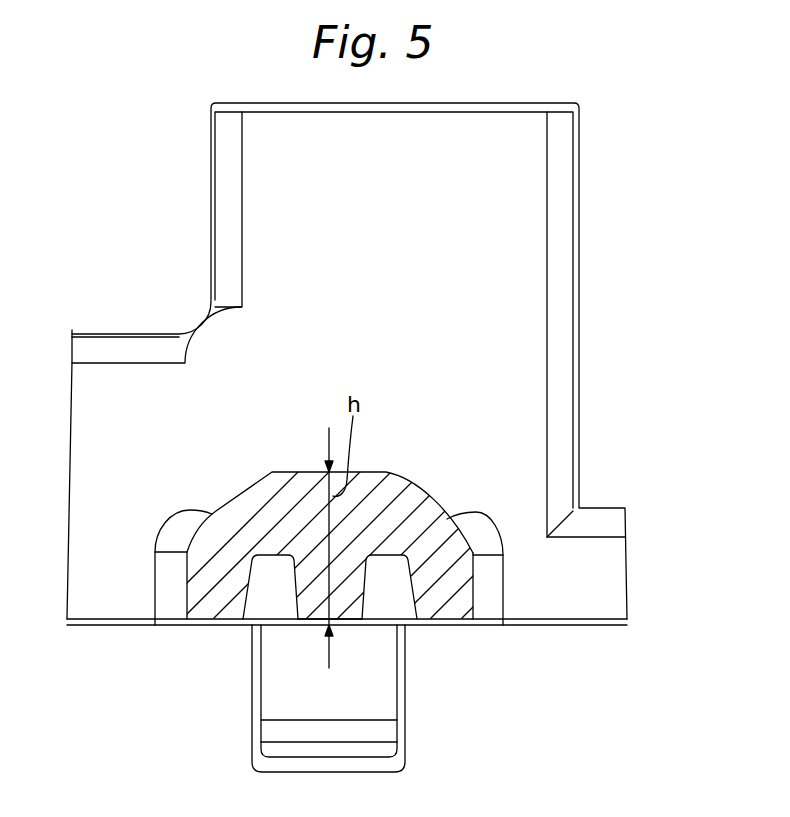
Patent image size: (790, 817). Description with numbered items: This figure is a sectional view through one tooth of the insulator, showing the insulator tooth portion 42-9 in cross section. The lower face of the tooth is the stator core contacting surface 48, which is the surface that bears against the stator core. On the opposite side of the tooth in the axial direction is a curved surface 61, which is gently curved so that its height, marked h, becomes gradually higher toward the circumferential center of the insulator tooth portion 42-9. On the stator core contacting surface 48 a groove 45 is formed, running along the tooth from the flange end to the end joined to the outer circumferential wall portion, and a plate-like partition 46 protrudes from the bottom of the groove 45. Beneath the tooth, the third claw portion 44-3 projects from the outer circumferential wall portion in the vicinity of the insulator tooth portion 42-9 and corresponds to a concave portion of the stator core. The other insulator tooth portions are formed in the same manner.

The insulator tooth portion 42-9 is at (405, 477).
The curved surface 61 is at (435, 498).
The groove 45 is at (251, 613).
The partition 46 is at (313, 619).
The stator core contacting surface 48 is at (214, 626).
The third claw portion 44-3 is at (405, 732).